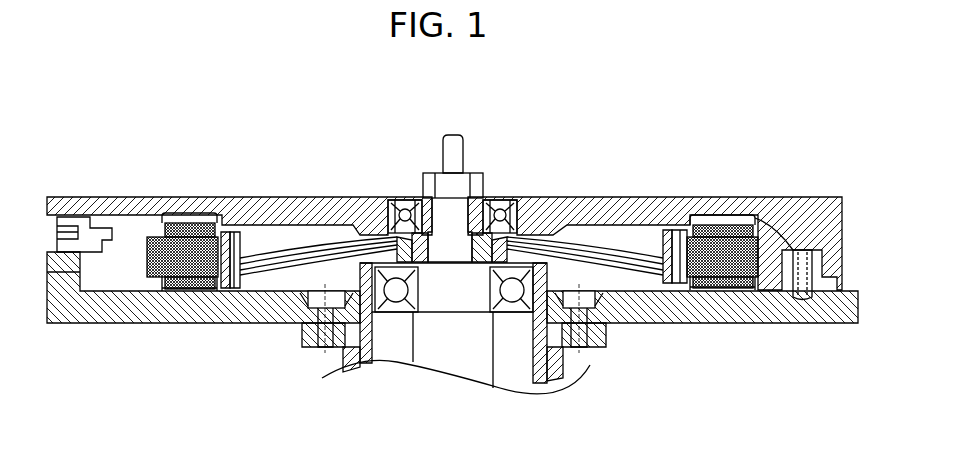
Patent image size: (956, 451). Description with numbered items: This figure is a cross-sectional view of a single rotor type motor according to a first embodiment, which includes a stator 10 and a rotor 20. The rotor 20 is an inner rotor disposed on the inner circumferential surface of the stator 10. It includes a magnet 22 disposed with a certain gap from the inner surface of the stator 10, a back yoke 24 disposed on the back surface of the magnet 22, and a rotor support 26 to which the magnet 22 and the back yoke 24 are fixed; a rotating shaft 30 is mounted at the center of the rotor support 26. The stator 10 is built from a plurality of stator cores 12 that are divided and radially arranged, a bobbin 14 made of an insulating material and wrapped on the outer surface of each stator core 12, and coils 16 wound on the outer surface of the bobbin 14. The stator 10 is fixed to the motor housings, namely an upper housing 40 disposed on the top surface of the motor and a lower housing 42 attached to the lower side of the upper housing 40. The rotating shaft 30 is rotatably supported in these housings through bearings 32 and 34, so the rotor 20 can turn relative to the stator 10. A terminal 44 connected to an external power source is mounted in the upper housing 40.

The stator 10 is at (430, 318).
The stator core 12 is at (157, 262).
The bobbin 14 is at (187, 278).
The coil 16 is at (205, 290).
The rotor 20 is at (450, 327).
The magnet 22 is at (222, 278).
The back yoke 24 is at (240, 278).
The rotor support 26 is at (307, 263).
The rotating shaft 30 is at (456, 148).
The bearing 32 is at (405, 212).
The bearing 34 is at (512, 290).
The upper housing 40 is at (248, 203).
The lower housing 42 is at (95, 310).
The terminal 44 is at (100, 222).